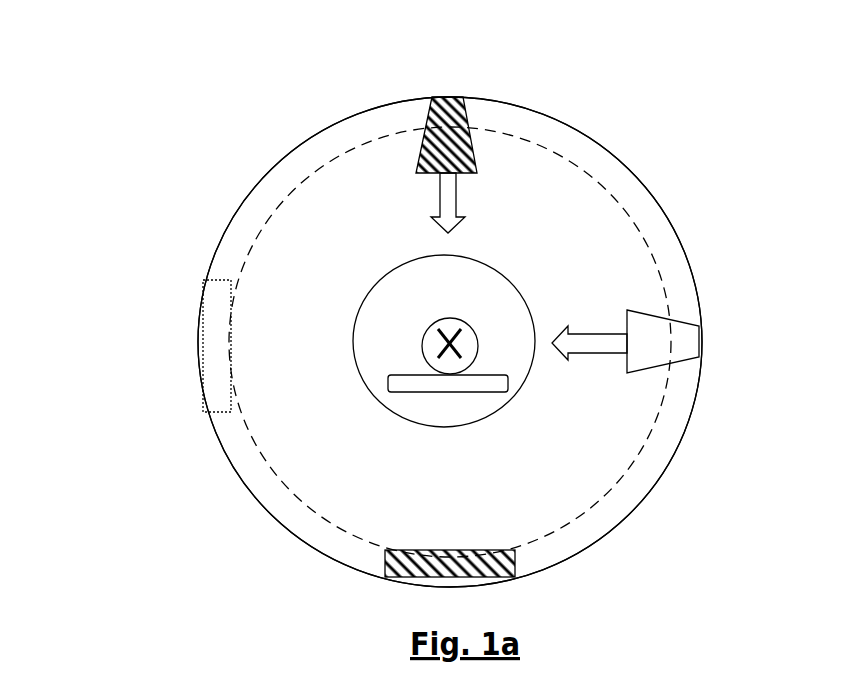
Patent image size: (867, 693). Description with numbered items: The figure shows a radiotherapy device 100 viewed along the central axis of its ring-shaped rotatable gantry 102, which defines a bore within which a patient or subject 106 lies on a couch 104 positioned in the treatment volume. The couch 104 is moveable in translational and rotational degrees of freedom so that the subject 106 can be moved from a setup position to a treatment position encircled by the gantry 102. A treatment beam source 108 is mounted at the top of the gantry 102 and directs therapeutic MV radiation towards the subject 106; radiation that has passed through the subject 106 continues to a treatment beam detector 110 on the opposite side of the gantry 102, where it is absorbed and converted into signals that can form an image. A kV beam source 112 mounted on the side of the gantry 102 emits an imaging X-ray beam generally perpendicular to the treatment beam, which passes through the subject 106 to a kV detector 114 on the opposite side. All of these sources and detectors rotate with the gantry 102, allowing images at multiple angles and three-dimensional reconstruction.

The radiotherapy device 100 is at (196, 167).
The rotatable gantry 102 is at (595, 140).
The couch 104 is at (417, 393).
The subject 106 is at (428, 327).
The treatment beam source 108 is at (465, 110).
The treatment beam detector 110 is at (513, 563).
The kV beam source 112 is at (688, 325).
The kV detector 114 is at (203, 328).